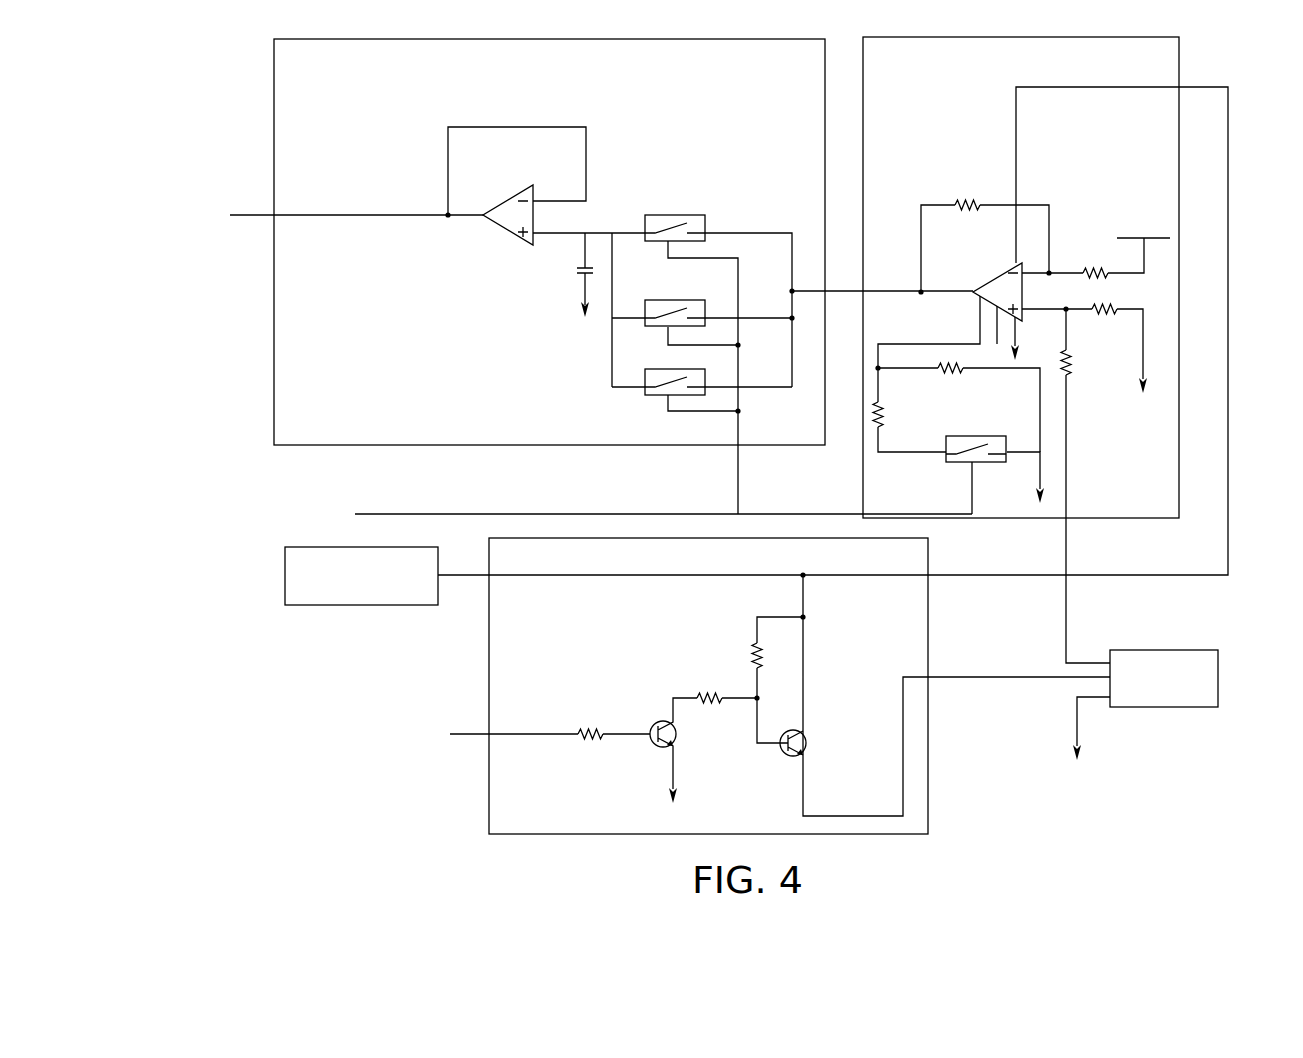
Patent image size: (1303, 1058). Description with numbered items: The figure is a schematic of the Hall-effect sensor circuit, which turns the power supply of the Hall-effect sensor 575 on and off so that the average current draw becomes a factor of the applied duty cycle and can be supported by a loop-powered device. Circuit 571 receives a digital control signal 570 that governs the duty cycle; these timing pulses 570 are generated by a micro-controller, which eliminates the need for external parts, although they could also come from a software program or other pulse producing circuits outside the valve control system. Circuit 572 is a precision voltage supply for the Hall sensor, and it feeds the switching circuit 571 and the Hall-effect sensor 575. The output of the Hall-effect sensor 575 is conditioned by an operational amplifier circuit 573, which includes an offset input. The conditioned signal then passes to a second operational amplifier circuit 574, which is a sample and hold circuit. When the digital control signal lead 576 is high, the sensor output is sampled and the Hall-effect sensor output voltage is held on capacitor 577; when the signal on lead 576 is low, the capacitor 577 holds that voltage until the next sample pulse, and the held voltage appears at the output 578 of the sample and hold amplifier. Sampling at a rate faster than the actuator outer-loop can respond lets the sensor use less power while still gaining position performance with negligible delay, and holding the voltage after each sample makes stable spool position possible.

The digital control signal 570 is at (450, 734).
The circuit 571 is at (838, 834).
The precision voltage supply 572 is at (284, 578).
The operational amplifier circuit 573 is at (1179, 60).
The operational amplifier circuit 574 is at (274, 87).
The Hall-effect sensor 575 is at (1218, 680).
The digital control signal lead 576 is at (366, 514).
The capacitor 577 is at (578, 272).
The output line 578 is at (232, 215).